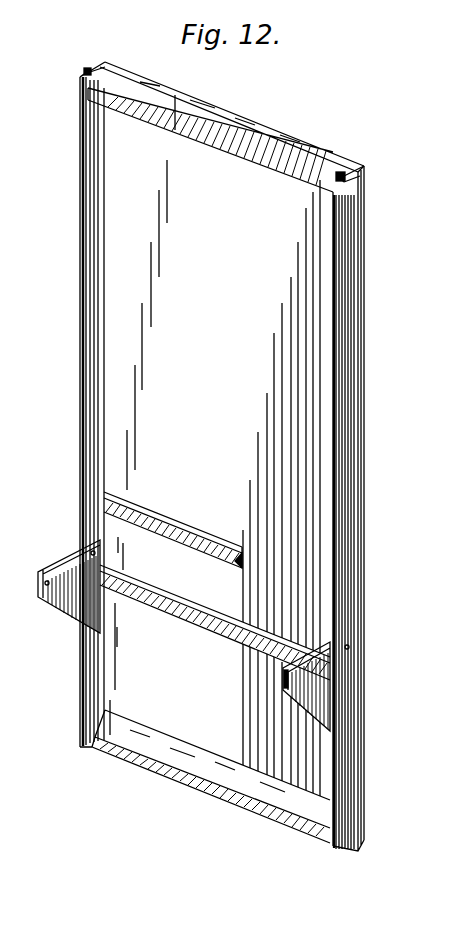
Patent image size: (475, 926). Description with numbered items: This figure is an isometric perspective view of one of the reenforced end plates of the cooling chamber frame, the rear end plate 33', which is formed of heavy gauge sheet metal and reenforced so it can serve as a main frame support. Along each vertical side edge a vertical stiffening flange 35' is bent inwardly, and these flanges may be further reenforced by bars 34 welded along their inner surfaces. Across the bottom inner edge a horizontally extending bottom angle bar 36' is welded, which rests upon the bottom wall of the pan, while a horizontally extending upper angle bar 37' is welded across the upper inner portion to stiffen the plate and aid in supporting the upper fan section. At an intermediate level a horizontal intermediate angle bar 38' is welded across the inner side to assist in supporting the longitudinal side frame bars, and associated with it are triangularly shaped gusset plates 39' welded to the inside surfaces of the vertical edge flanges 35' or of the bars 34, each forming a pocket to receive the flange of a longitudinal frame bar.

The end plate 33' is at (215, 445).
The bar 34 is at (82, 76).
The vertical stiffening flange 35' is at (220, 125).
The bottom angle bar 36' is at (211, 776).
The upper angle bar 37' is at (226, 127).
The intermediate angle bar 38' is at (215, 586).
The gusset plate 39' is at (217, 635).